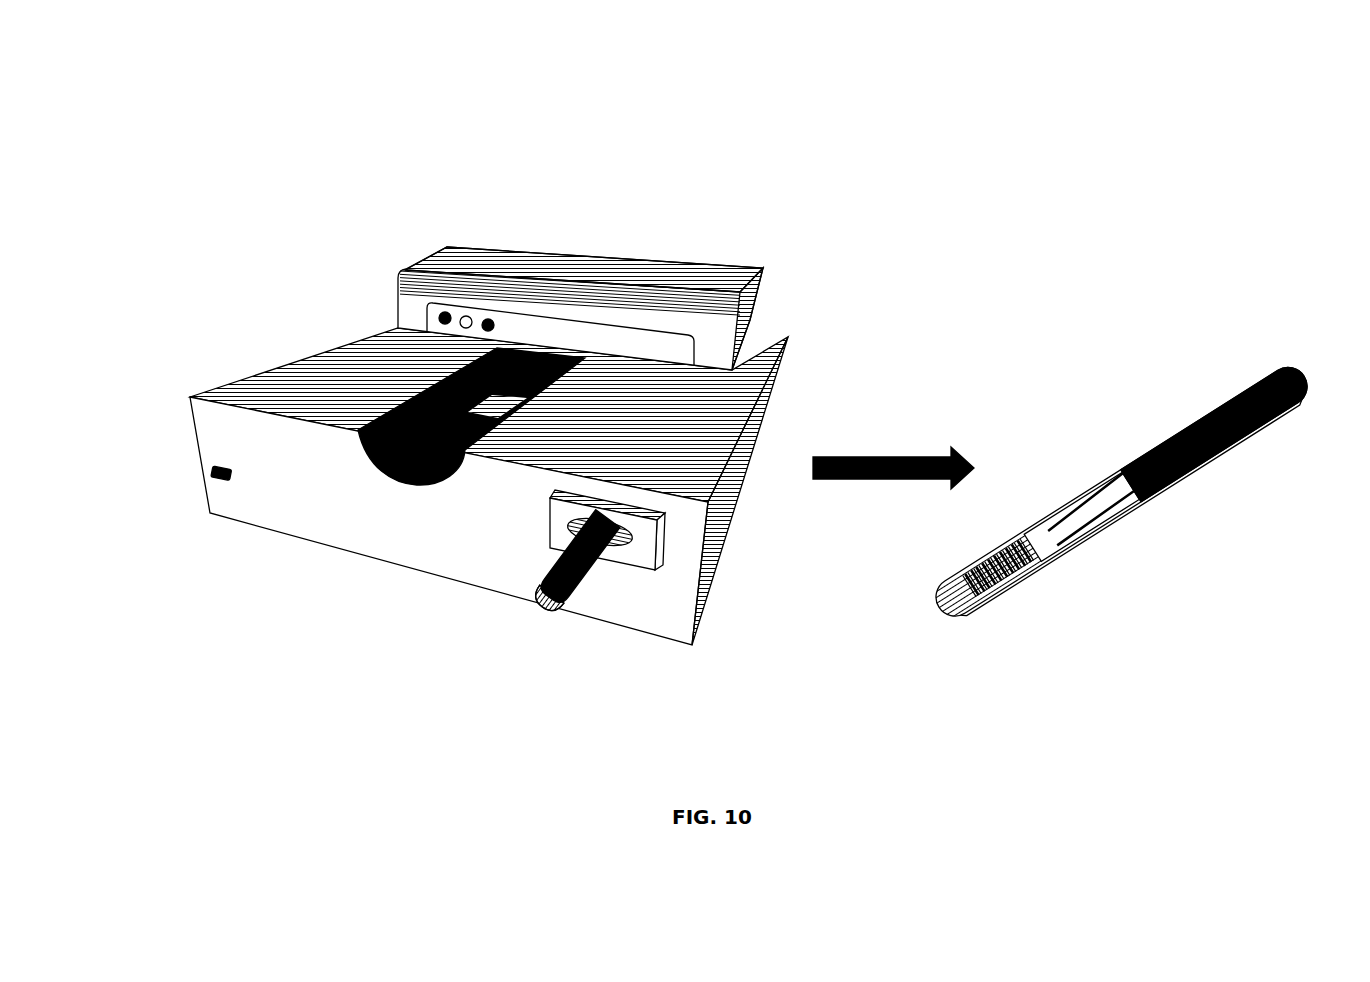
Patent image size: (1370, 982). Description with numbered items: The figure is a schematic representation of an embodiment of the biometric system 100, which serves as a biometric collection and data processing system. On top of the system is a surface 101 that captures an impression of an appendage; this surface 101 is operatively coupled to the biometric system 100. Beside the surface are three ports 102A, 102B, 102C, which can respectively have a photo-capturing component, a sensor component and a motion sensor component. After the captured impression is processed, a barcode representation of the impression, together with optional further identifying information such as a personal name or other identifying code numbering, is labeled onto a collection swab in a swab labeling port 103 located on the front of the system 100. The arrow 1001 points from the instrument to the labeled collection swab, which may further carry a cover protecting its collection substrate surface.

The biometric system 100 is at (489, 395).
The surface 101 is at (458, 372).
The port 102A is at (493, 310).
The port 102B is at (467, 305).
The port 102C is at (443, 303).
The swab labeling port 103 is at (653, 547).
The insertion direction arrow 1001 is at (893, 463).